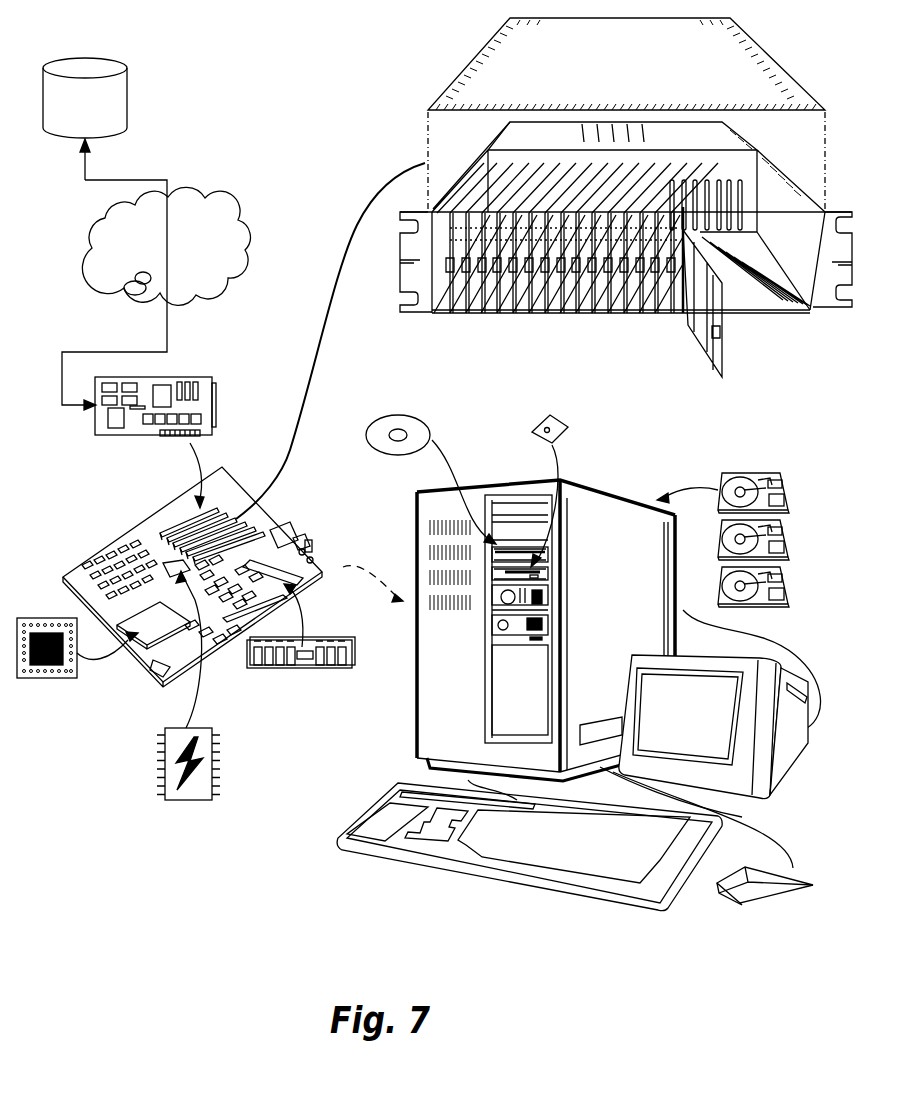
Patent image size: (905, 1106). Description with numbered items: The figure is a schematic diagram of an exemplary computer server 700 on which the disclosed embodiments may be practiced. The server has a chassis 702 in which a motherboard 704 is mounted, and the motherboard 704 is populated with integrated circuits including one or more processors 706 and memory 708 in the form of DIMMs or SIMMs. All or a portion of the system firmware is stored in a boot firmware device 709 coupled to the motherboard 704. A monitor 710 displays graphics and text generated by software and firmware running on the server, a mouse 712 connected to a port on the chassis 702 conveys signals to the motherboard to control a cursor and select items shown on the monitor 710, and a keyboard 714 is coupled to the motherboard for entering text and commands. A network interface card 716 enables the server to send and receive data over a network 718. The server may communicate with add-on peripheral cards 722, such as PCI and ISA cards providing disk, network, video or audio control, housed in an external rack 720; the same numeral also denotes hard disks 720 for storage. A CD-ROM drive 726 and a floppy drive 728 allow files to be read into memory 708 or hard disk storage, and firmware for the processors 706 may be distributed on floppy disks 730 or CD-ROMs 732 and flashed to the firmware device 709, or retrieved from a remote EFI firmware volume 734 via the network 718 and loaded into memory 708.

The computer server 700 is at (215, 940).
The chassis 702 is at (428, 728).
The motherboard 704 is at (113, 540).
The processor 706 is at (74, 680).
The memory 708 is at (352, 655).
The boot firmware device 709 is at (192, 795).
The monitor 710 is at (790, 760).
The mouse 712 is at (797, 903).
The keyboard 714 is at (557, 865).
The network interface card 716 is at (167, 380).
The network 718 is at (212, 272).
The external rack 720 is at (580, 312).
The add-on peripheral card 722 is at (722, 340).
The CD-ROM drive 726 is at (522, 546).
The floppy drive 728 is at (550, 567).
The floppy disk 730 is at (568, 426).
The CD-ROM 732 is at (424, 428).
The remote EFI firmware volume 734 is at (129, 99).